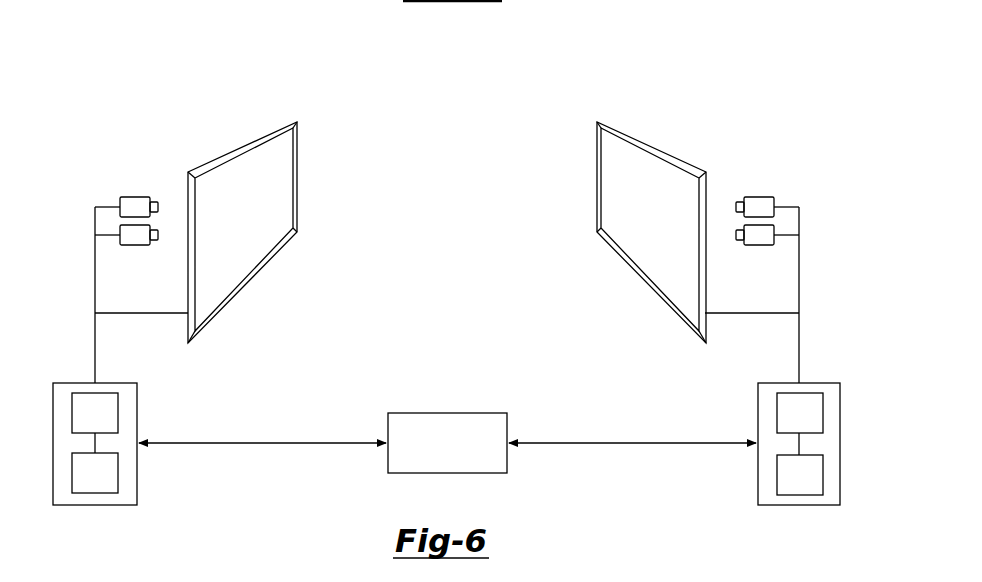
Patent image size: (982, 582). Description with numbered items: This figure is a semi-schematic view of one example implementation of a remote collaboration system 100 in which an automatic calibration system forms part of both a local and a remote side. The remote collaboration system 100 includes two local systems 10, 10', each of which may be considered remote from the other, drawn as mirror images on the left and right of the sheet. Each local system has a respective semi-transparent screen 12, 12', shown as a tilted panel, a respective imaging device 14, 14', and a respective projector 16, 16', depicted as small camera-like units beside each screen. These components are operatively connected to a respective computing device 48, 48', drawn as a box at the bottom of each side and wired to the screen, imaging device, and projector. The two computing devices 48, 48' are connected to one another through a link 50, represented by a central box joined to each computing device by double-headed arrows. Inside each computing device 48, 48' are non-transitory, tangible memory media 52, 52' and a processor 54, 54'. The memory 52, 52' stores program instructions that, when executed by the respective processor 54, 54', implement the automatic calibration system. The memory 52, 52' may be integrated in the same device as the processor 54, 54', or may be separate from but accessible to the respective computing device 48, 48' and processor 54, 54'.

The remote collaboration system 100 is at (587, 55).
The local system 10 is at (131, 235).
The local system 10' is at (768, 235).
The semi-transparent screen 12 is at (269, 232).
The semi-transparent screen 12' is at (624, 232).
The imaging device 14 is at (139, 184).
The imaging device 14' is at (758, 184).
The projector 16 is at (139, 259).
The projector 16' is at (758, 259).
The computing device 48 is at (95, 468).
The computing device 48' is at (799, 469).
The link 50 is at (448, 413).
The memory 52 is at (95, 413).
The memory 52' is at (800, 413).
The processor 54 is at (95, 473).
The processor 54' is at (800, 475).